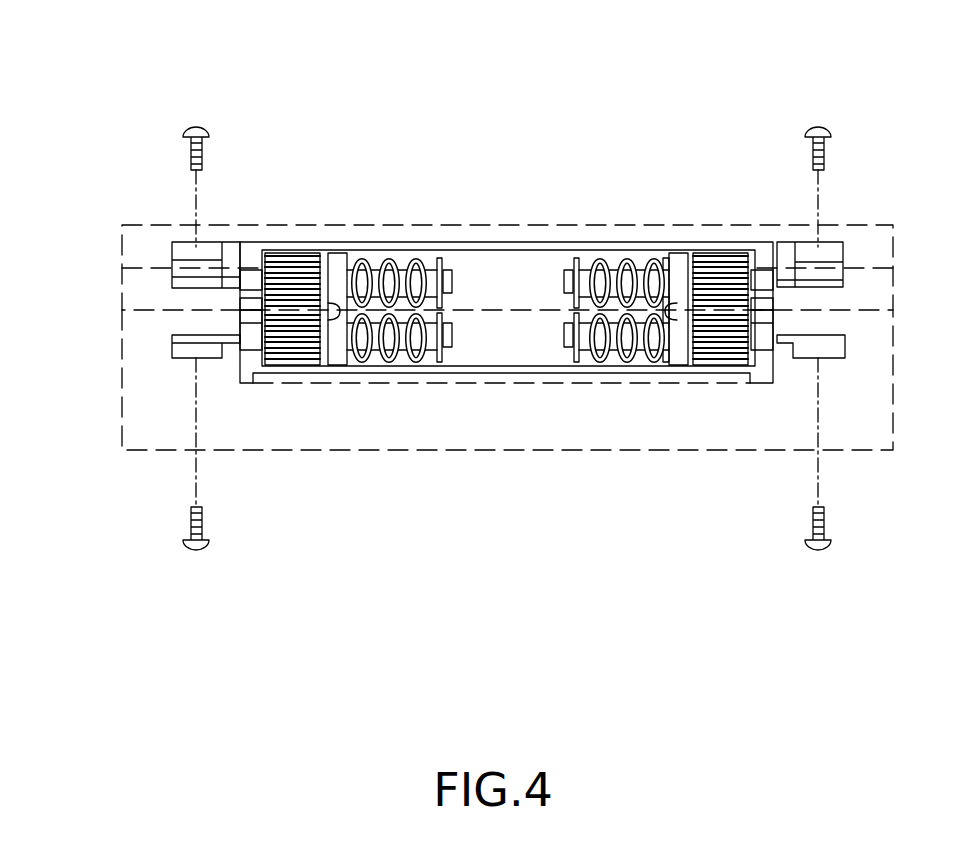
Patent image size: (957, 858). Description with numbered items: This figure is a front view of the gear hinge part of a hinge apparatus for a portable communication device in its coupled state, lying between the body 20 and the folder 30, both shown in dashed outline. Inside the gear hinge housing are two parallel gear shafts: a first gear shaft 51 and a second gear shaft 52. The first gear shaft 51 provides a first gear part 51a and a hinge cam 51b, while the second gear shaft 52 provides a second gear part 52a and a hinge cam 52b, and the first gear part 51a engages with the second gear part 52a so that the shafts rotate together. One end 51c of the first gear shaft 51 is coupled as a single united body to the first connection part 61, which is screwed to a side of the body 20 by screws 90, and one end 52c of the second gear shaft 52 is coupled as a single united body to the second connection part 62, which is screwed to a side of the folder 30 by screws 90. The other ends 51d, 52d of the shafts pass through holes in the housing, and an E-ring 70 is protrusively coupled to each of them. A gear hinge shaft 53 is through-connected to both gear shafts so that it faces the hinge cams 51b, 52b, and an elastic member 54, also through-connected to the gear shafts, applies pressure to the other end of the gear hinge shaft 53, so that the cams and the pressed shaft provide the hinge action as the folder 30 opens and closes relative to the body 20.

The body 20 is at (122, 354).
The folder 30 is at (122, 246).
The first gear shaft 51 is at (247, 556).
The first gear part 51a is at (287, 383).
The hinge cam 51b is at (325, 383).
The one end of the first gear shaft 51c is at (245, 383).
The another end of the first gear shaft 51d is at (447, 383).
The second gear shaft 52 is at (445, 64).
The second gear part 52a is at (281, 240).
The hinge cam 52b is at (321, 240).
The one end of the second gear shaft 52c is at (246, 240).
The another end of the second gear shaft 52d is at (447, 240).
The gear hinge shaft 53 is at (665, 383).
The elastic member 54 is at (601, 383).
The first connection part 61 is at (172, 358).
The second connection part 62 is at (172, 245).
The E-ring 70 is at (571, 302).
The screws 90 is at (193, 122).